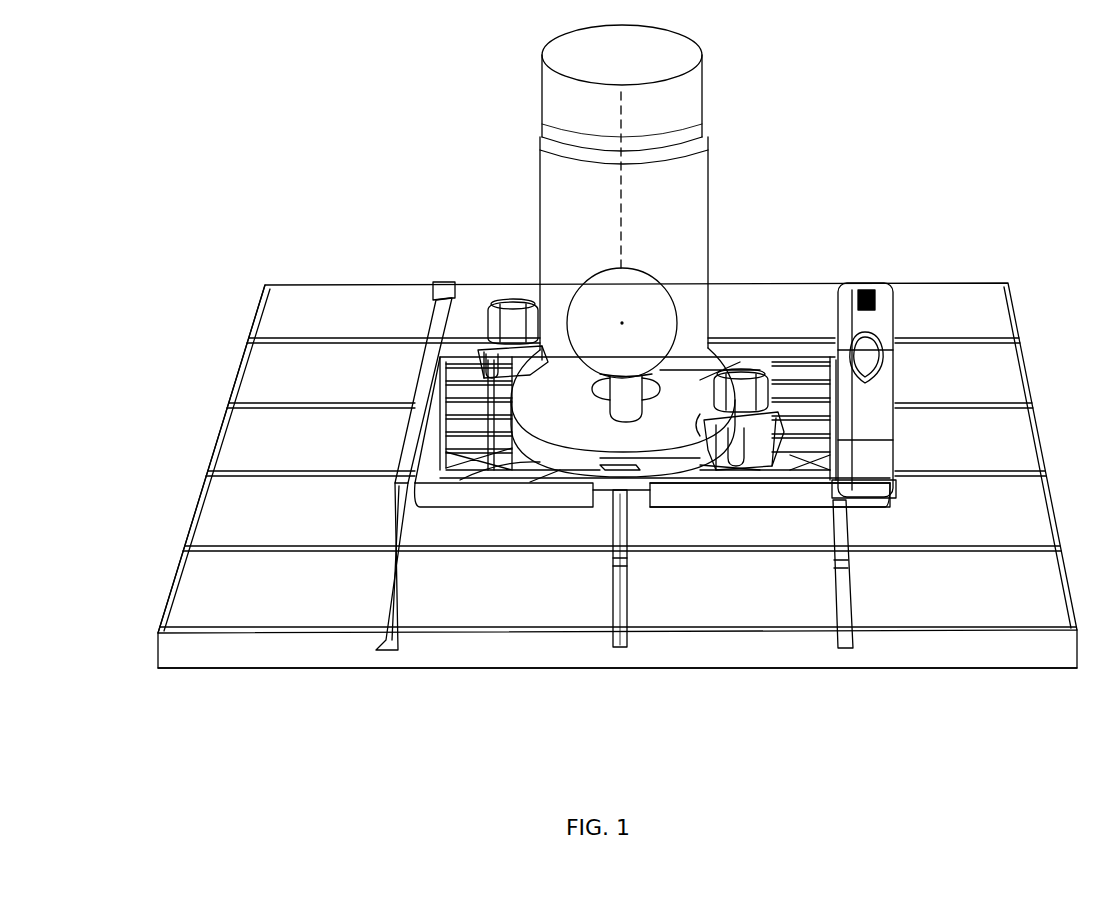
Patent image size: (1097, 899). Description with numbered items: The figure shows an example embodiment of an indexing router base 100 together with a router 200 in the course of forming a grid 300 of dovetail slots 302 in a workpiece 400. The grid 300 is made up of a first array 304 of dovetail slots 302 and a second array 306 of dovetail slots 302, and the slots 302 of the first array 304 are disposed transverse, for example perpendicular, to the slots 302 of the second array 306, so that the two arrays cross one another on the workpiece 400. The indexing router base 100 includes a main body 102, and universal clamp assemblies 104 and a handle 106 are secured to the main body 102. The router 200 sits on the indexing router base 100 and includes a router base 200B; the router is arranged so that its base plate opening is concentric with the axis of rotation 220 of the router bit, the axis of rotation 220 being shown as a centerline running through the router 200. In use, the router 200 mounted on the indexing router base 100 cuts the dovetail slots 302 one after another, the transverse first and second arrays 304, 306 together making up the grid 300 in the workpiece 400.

The indexing router base 100 is at (446, 441).
The main body 102 is at (670, 500).
The universal clamp assemblies 104 is at (494, 348).
The handle 106 is at (866, 452).
The router 200 is at (555, 185).
The router base 200B is at (577, 447).
The axis of rotation 220 is at (622, 224).
The grid 300 is at (325, 308).
The dovetail slots 302 is at (393, 577).
The first array 304 is at (872, 682).
The second array 306 is at (228, 315).
The workpiece 400 is at (943, 518).